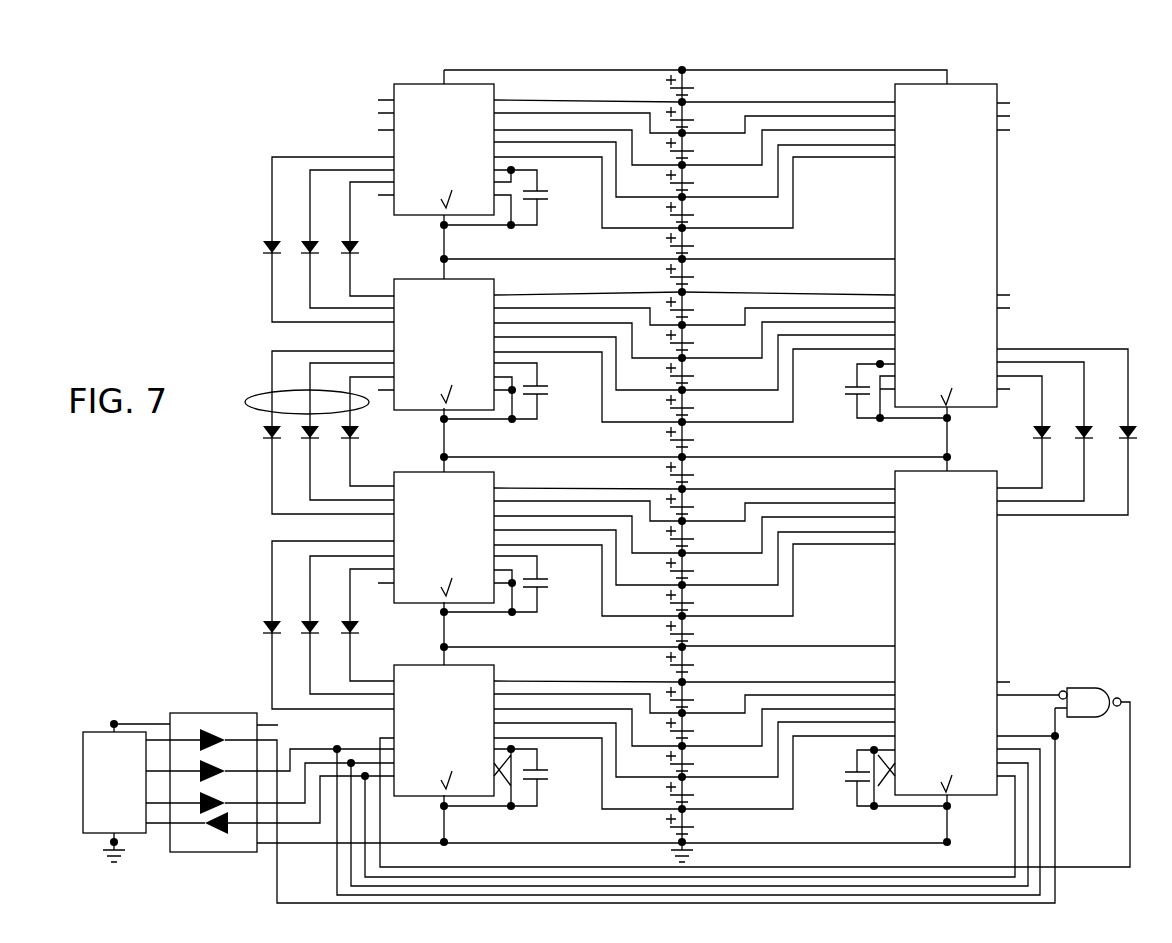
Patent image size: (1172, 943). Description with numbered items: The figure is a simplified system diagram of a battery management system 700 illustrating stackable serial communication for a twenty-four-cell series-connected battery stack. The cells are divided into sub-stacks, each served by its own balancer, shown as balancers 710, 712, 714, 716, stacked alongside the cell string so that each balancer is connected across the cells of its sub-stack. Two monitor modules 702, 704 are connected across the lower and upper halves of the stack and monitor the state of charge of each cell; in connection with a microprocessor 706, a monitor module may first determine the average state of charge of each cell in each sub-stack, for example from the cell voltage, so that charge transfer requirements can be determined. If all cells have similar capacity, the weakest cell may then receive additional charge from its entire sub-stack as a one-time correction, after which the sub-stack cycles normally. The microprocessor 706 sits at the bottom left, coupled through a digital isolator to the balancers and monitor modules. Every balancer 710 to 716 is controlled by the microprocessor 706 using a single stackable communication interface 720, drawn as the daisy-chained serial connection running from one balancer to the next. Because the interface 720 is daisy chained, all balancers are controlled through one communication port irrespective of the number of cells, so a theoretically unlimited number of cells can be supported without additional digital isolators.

The battery monitoring and balancing system 700 is at (592, 461).
The monitor module 702 is at (997, 602).
The monitor module 704 is at (997, 243).
The microprocessor 706 is at (92, 732).
The balancer 710 is at (496, 680).
The balancer 712 is at (496, 487).
The balancer 714 is at (496, 294).
The balancer 716 is at (496, 99).
The stackable communication interface 720 is at (258, 396).